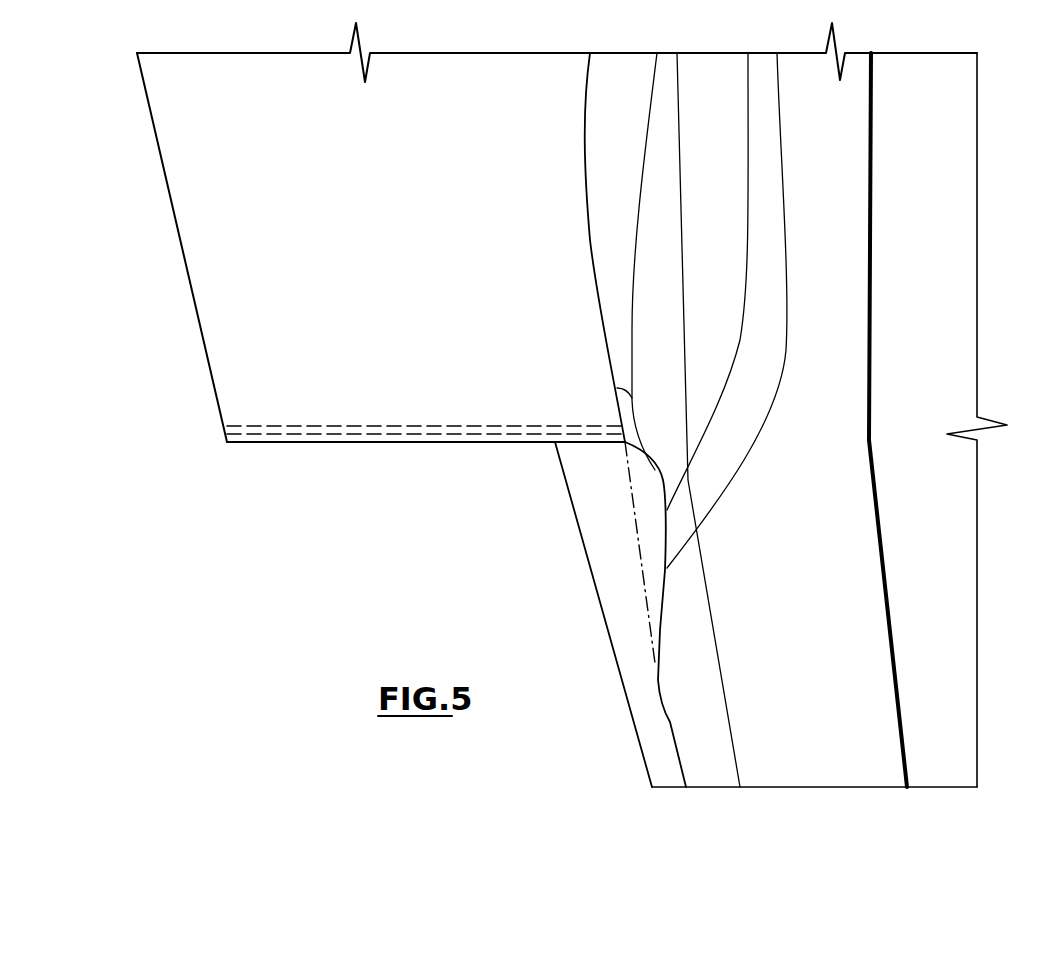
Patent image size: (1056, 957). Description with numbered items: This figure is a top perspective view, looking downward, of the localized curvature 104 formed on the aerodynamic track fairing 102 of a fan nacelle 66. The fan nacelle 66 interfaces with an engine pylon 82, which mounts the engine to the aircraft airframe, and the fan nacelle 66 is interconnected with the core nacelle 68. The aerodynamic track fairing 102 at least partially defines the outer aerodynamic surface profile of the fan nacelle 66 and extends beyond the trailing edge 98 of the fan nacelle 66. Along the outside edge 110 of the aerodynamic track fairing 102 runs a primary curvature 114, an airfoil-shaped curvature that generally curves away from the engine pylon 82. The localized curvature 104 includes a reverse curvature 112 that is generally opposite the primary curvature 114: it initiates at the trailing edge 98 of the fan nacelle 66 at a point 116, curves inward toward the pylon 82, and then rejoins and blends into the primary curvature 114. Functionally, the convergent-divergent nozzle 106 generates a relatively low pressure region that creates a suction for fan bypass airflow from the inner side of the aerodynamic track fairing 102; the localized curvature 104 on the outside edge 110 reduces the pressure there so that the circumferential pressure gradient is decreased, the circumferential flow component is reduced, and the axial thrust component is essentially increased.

The fan nacelle 66 is at (364, 166).
The core nacelle 68 is at (655, 742).
The engine pylon 82 is at (937, 610).
The trailing edge 98 is at (282, 442).
The aerodynamic track fairing 102 is at (692, 186).
The localized curvature 104 is at (672, 607).
The convergent-divergent nozzle 106 is at (387, 433).
The outside edge 110 is at (597, 290).
The reverse curvature 112 is at (667, 510).
The primary curvature 114 is at (643, 582).
The point 116 is at (625, 442).